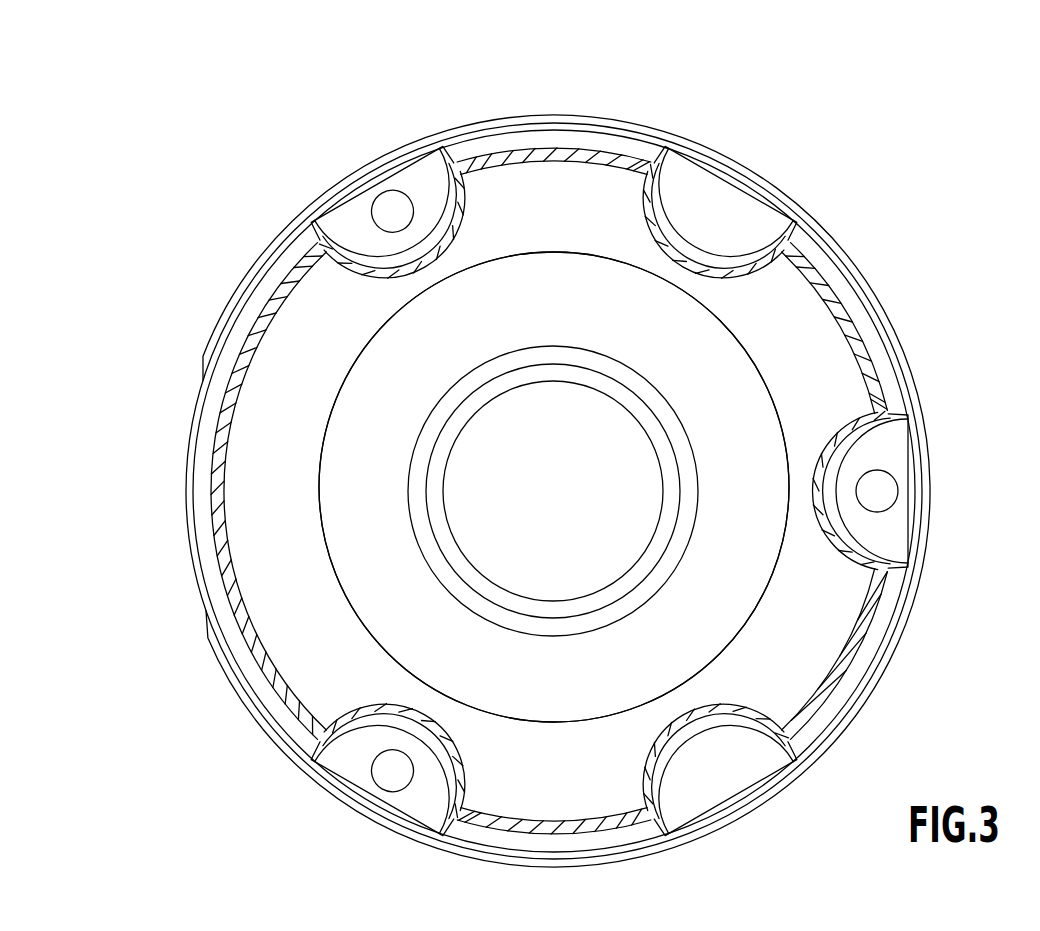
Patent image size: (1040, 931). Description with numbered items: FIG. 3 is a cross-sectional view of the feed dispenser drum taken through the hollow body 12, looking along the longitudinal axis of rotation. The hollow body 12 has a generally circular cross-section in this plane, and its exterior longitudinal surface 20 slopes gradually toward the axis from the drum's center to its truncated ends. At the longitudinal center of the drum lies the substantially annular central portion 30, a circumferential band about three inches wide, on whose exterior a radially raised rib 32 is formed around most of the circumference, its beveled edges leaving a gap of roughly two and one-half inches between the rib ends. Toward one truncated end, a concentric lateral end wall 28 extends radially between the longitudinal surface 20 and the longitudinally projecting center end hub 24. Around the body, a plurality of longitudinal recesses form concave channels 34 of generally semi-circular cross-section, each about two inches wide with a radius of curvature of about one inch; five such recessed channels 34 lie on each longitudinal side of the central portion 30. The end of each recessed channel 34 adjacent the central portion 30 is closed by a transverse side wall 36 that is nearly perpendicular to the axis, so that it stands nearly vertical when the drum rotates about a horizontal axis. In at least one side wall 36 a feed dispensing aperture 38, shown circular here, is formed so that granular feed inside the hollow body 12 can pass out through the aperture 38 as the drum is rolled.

The hollow body 12 is at (303, 262).
The longitudinal surface 20 is at (512, 200).
The center end hub 24 is at (656, 398).
The lateral end wall 28 is at (578, 303).
The central portion 30 is at (198, 410).
The radially raised rib 32 is at (208, 355).
The recessed channel 34 is at (718, 258).
The side wall 36 is at (416, 172).
The feed dispensing aperture 38 is at (388, 207).